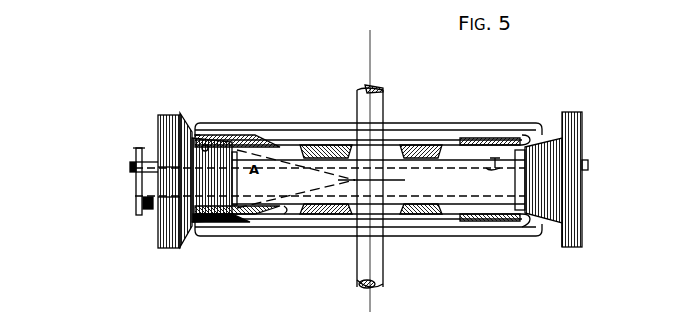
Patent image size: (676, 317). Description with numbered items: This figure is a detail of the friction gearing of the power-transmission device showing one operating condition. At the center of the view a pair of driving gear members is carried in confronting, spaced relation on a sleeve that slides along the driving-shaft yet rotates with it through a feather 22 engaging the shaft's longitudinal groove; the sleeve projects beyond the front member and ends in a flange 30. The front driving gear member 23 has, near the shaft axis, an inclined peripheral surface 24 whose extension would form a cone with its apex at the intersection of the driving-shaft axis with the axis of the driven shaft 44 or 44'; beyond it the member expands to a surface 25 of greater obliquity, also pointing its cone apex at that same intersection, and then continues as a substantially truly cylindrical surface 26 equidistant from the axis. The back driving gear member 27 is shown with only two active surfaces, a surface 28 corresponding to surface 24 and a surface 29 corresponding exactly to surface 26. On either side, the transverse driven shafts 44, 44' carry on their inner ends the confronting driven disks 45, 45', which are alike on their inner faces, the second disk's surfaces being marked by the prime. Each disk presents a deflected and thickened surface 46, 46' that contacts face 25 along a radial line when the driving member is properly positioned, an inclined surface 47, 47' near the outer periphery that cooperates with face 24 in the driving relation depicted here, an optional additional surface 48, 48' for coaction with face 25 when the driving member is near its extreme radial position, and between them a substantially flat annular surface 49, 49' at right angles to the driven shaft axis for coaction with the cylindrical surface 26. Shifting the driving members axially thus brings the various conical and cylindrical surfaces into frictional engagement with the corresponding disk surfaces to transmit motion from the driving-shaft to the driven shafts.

The feather 22 is at (132, 168).
The flange 30 is at (138, 208).
The cylindrical surface 26 is at (168, 248).
The inclined surface 25 is at (186, 246).
The front driving gear member 23 is at (214, 180).
The peripheral surface 24 is at (198, 232).
The annular surface 49 is at (248, 128).
The annular surface 49' is at (242, 238).
The driven gear member or disk 45 is at (368, 116).
The driven disk 45' is at (373, 244).
The additional surface 48 is at (362, 121).
The additional surface 48' is at (362, 242).
The inclined surface 47 is at (374, 119).
The inclined surface 47' is at (358, 242).
The deflected surface 46 is at (371, 128).
The deflected surface 46' is at (371, 237).
The driven shaft 44 is at (377, 186).
The driven shaft 44' is at (391, 289).
The back driving gear member 27 is at (524, 180).
The cylindrical surface 29 is at (578, 114).
The inclined surface 28 is at (564, 232).